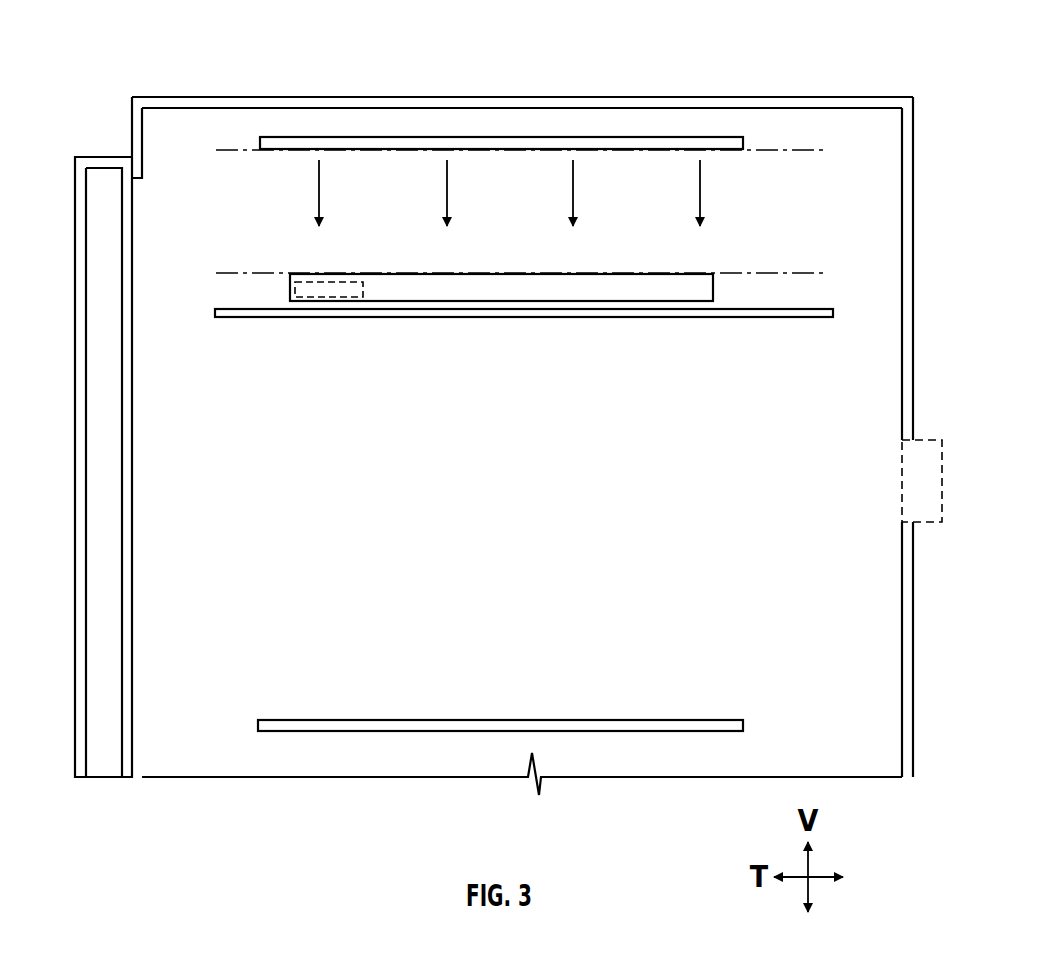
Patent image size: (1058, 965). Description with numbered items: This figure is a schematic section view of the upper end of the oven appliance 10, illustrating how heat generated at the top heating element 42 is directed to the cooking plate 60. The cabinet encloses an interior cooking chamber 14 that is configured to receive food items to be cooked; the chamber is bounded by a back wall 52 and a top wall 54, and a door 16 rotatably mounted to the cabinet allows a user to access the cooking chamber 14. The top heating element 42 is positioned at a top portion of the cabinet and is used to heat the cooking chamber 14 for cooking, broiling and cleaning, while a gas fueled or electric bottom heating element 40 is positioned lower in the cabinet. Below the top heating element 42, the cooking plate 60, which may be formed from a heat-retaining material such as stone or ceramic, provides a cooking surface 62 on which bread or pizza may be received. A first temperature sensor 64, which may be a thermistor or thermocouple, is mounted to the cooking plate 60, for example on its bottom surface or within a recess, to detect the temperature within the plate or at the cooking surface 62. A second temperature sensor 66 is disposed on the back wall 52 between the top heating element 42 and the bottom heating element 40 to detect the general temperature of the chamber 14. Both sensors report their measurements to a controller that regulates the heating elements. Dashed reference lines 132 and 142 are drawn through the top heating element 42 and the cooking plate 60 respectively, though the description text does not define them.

The oven appliance 10 is at (501, 400).
The cooking chamber 14 is at (312, 602).
The door 16 is at (83, 340).
The bottom heating element 40 is at (513, 720).
The top heating element 42 is at (492, 138).
The back wall 52 is at (913, 283).
The top wall 54 is at (730, 97).
The cooking plate 60 is at (515, 290).
The cooking surface 62 is at (435, 266).
The first temperature sensor 64 is at (348, 297).
The second temperature sensor 66 is at (942, 522).
The first axis 132 is at (793, 150).
The second axis 142 is at (793, 280).